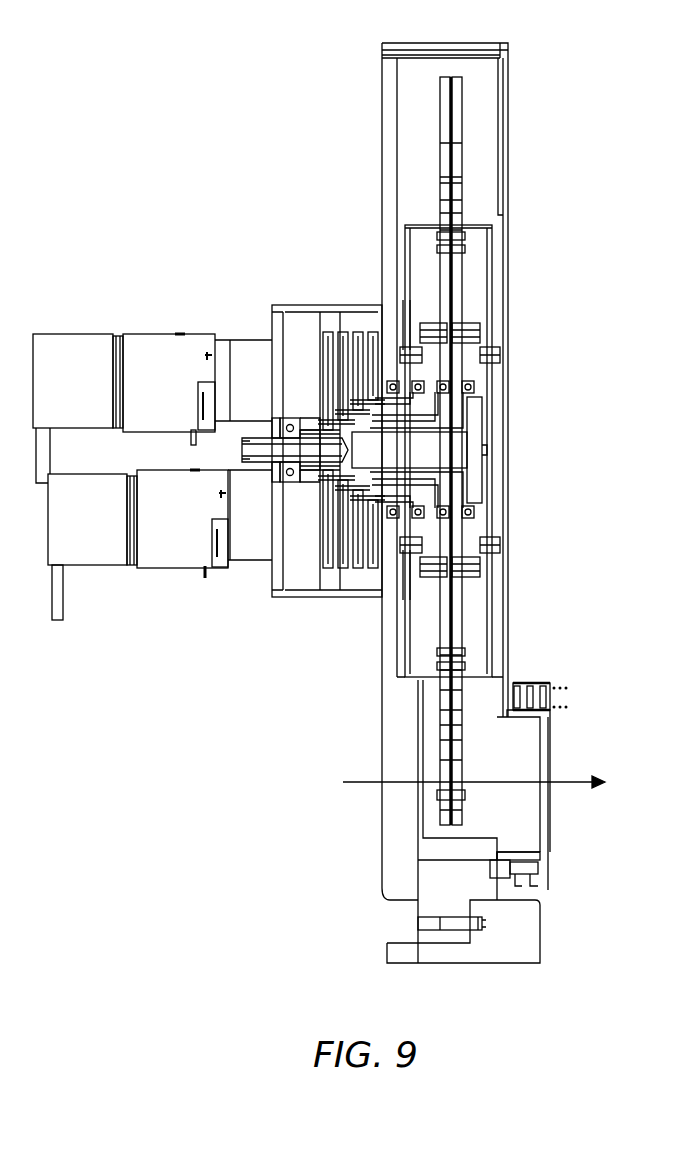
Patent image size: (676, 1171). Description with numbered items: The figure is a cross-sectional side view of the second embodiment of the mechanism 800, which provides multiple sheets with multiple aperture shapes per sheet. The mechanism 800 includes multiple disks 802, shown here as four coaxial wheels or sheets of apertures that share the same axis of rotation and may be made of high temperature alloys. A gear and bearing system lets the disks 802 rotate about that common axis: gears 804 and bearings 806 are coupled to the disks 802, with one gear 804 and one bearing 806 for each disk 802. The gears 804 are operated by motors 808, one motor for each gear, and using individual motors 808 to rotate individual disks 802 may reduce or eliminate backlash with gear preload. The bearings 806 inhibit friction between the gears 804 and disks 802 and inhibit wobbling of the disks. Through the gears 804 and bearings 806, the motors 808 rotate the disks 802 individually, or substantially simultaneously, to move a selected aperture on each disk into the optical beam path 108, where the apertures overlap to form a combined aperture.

The mechanism 800 is at (208, 176).
The disks 802 is at (445, 735).
The gears 804 is at (329, 345).
The bearings 806 is at (411, 374).
The motors 808 is at (138, 314).
The optical beam path 108 is at (573, 785).